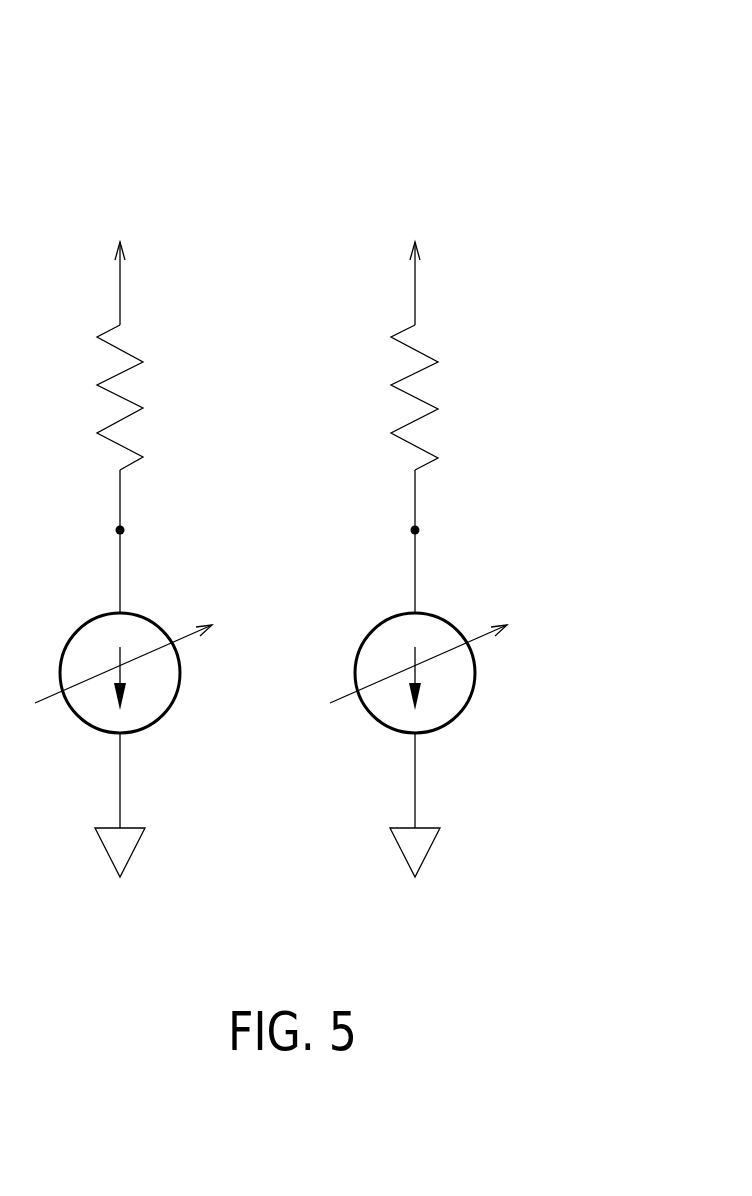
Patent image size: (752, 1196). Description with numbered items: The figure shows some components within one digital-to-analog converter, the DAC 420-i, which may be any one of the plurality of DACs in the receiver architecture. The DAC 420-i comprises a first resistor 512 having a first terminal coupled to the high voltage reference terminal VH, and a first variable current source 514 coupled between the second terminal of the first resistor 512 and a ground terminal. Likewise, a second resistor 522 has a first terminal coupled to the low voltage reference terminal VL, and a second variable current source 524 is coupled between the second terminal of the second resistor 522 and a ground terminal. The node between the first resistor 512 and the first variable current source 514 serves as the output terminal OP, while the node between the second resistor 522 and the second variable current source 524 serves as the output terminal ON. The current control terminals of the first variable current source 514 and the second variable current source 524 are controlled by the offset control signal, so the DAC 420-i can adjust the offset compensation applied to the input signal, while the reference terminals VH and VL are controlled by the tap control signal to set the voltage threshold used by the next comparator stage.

The DAC 420-i is at (524, 82).
The first resistor 512 is at (160, 375).
The first variable current source 514 is at (158, 720).
The second resistor 522 is at (453, 375).
The second variable current source 524 is at (453, 720).